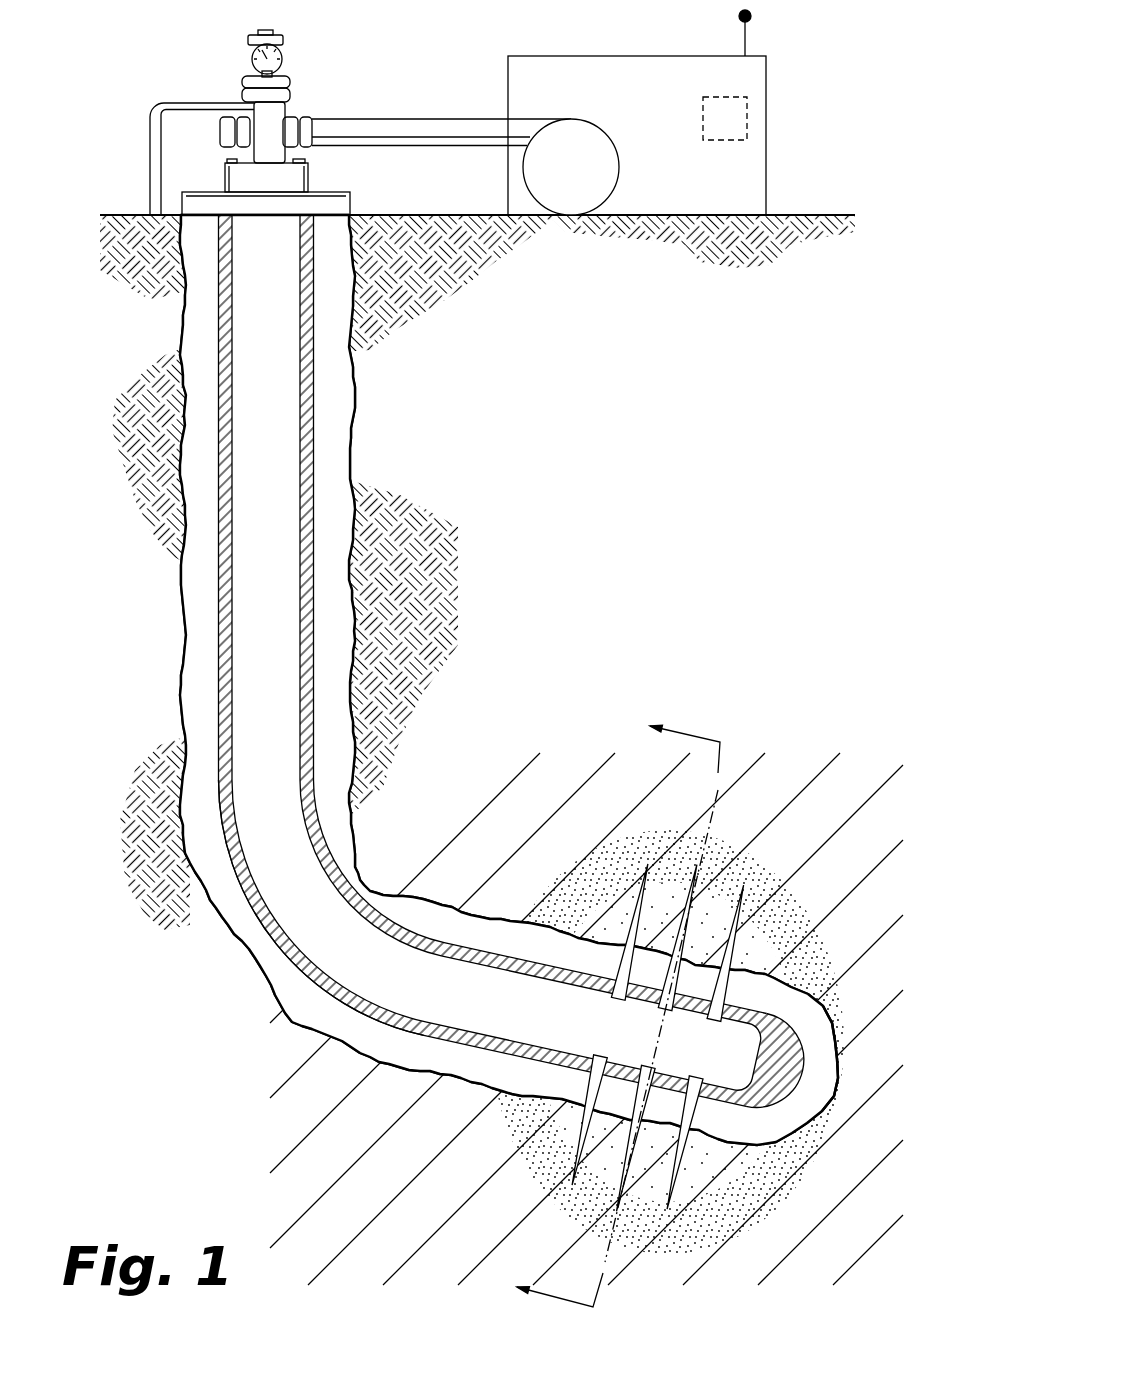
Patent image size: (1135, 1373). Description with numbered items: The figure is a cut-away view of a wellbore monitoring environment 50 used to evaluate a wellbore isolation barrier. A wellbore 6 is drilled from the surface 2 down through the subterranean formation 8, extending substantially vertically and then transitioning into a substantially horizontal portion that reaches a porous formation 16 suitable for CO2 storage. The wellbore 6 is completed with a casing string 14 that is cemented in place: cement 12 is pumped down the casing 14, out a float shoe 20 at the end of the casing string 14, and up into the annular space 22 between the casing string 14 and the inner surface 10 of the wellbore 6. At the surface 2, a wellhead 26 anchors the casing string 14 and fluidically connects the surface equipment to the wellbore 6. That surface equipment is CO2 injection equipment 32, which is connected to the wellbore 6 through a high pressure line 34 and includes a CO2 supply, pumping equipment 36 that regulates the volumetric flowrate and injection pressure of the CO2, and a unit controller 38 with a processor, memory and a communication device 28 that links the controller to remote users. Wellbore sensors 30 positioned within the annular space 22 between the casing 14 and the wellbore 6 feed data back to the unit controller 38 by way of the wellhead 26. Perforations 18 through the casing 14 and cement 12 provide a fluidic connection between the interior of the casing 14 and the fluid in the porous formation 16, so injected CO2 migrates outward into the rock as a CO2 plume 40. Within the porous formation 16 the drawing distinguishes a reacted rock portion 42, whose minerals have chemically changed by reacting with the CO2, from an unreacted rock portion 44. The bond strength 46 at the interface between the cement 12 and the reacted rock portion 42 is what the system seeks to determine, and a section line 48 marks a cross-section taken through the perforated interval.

The surface 2 is at (477, 182).
The wellbore 6 is at (496, 652).
The subterranean formation 8 is at (477, 572).
The inner surface 10 is at (509, 680).
The cement 12 is at (468, 680).
The casing string 14 is at (451, 661).
The porous formation 16 is at (586, 1019).
The perforations 18 is at (669, 1159).
The float shoe 20 is at (805, 1092).
The annular space 22 is at (285, 907).
The wellhead 26 is at (270, 122).
The communication device 28 is at (787, 32).
The wellbore sensors 30 is at (445, 649).
The CO2 injection equipment 32 is at (637, 135).
The high pressure line 34 is at (441, 91).
The pumping equipment 36 is at (612, 167).
The unit controller 38 is at (725, 118).
The CO2 plume 40 is at (668, 971).
The reacted rock portion 42 is at (663, 942).
The unreacted rock portion 44 is at (668, 989).
The bond strength 46 is at (848, 1003).
The section line 48 is at (607, 1010).
The wellbore monitoring environment 50 is at (885, 39).